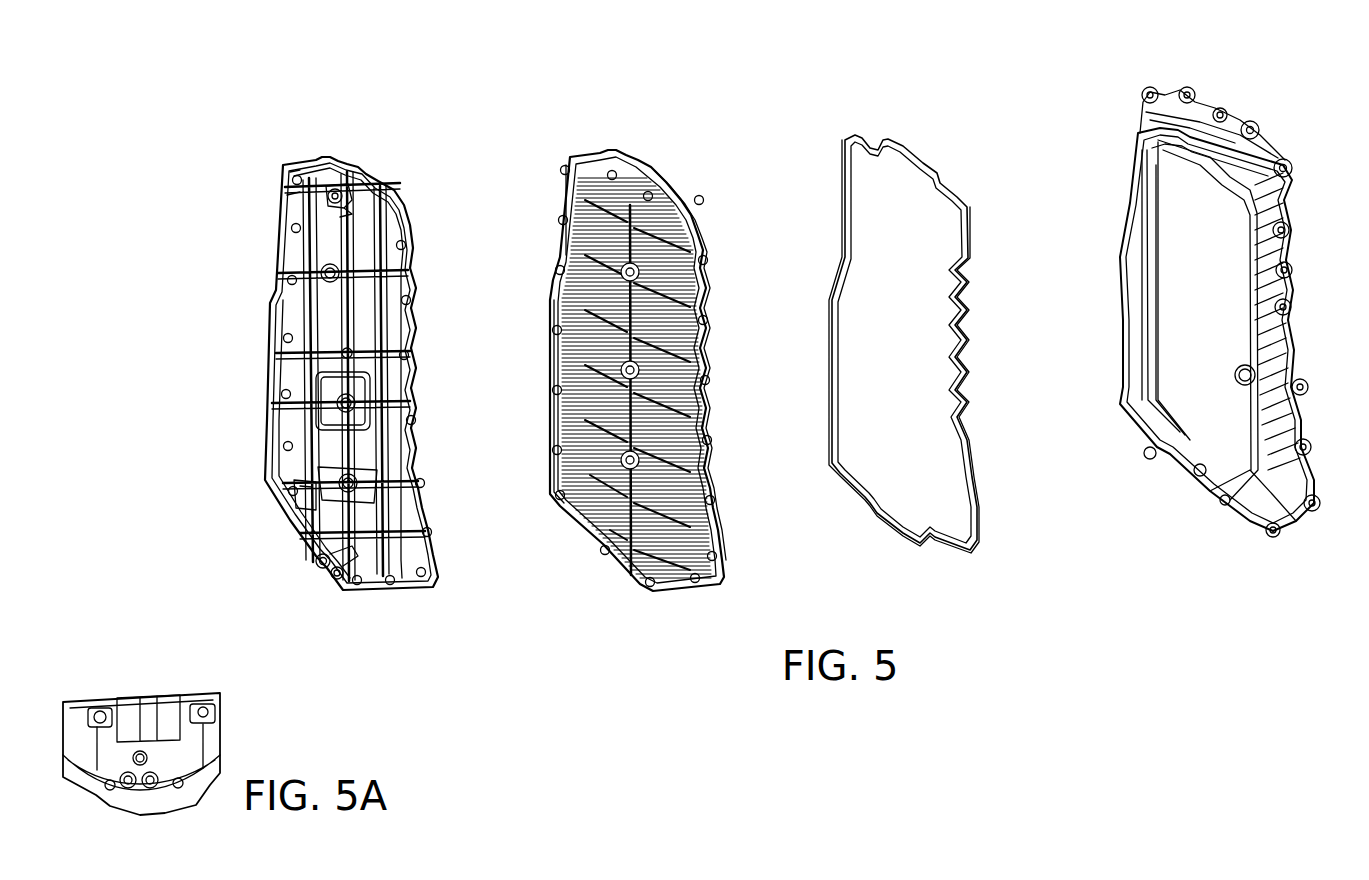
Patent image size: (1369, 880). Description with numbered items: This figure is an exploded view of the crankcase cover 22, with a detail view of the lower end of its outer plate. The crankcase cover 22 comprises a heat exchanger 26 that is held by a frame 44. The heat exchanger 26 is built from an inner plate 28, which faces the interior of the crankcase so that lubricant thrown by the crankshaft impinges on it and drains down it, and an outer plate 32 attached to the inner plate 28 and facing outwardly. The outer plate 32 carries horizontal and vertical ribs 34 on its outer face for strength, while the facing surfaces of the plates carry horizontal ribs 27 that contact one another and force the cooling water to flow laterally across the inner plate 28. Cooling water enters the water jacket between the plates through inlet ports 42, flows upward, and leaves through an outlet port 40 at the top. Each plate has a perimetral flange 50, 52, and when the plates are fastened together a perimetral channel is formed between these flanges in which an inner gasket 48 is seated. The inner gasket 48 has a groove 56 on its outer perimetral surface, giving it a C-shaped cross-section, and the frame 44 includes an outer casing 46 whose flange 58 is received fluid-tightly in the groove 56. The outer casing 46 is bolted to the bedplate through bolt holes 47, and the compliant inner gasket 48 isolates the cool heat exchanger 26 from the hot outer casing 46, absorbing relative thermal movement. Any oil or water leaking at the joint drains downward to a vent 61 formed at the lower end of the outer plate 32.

In FIG. 5, the crankcase cover 22 is at (1305, 56).
In FIG. 5, the heat exchanger 26 is at (680, 657).
In FIG. 5, the ribs 27 is at (562, 330).
In FIG. 5, the inner plate 28 is at (682, 190).
In FIG. 5, the outer plate 32 is at (291, 297).
In FIG. 5A, the outer plate 32 is at (107, 703).
In FIG. 5, the ribs 34 is at (316, 384).
In FIG. 5, the outlet port 40 is at (345, 172).
In FIG. 5, the inlet ports 42 is at (325, 566).
In FIG. 5A, the inlet ports 42 is at (128, 790).
In FIG. 5, the frame 44 is at (958, 590).
In FIG. 5, the outer casing 46 is at (1290, 412).
In FIG. 5, the bolt holes 47 is at (1282, 172).
In FIG. 5, the inner gasket 48 is at (968, 250).
In FIG. 5, the perimetral flange 50 is at (715, 580).
In FIG. 5, the perimetral flange 52 is at (432, 582).
In FIG. 5, the groove 56 is at (985, 480).
In FIG. 5, the flange 58 is at (1180, 152).
In FIG. 5A, the vent 61 is at (140, 798).